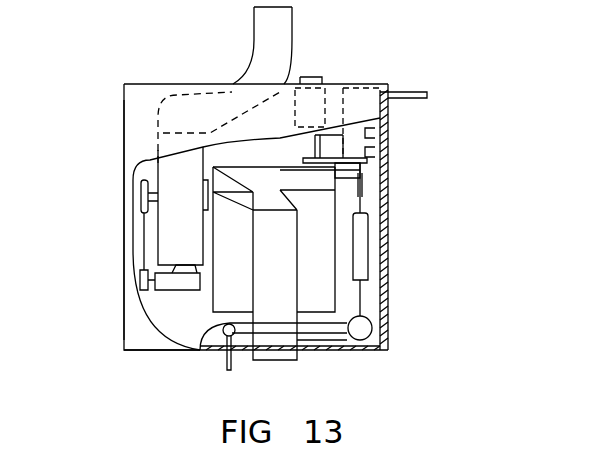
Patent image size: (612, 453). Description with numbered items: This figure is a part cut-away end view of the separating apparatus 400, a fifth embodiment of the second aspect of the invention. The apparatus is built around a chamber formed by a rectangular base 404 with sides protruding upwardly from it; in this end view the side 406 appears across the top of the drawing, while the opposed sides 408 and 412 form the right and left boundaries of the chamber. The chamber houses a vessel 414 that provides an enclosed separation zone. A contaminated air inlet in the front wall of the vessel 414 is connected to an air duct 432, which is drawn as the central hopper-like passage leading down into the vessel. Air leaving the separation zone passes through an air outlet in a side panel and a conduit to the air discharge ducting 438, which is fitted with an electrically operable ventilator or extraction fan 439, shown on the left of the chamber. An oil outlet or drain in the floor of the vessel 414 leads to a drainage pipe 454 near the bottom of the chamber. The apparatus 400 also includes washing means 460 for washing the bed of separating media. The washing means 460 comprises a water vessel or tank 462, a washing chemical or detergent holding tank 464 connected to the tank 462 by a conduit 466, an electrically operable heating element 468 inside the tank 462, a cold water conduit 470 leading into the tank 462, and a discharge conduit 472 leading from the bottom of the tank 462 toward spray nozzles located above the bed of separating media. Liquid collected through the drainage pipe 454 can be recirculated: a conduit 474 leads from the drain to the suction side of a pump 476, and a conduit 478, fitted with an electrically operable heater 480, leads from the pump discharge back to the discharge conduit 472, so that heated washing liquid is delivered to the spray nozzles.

The separating apparatus 400 is at (515, 78).
The rectangular base 404 is at (135, 351).
The side 406 is at (147, 93).
The side 408 is at (380, 262).
The side 412 is at (124, 118).
The vessel 414 is at (200, 298).
The air duct 432 is at (272, 340).
The air discharge ducting 438 is at (173, 202).
The extraction fan 439 is at (160, 286).
The drainage pipe 454 is at (203, 347).
The washing means 460 is at (392, 147).
The water vessel or tank 462 is at (366, 82).
The washing chemical holding tank 464 is at (334, 82).
The conduit 466 is at (315, 158).
The heating element 468 is at (392, 136).
The cold water conduit 470 is at (398, 92).
The discharge conduit 472 is at (363, 164).
The conduit 474 is at (322, 346).
The pump 476 is at (367, 328).
The conduit 478 is at (360, 197).
The heater 480 is at (358, 250).